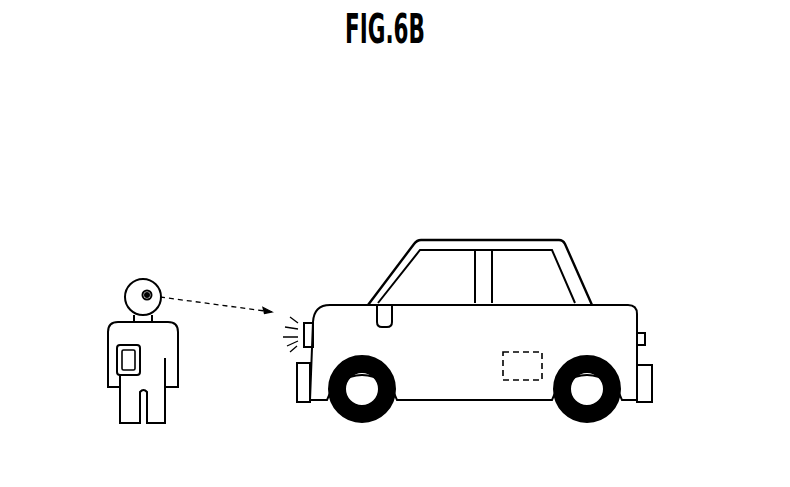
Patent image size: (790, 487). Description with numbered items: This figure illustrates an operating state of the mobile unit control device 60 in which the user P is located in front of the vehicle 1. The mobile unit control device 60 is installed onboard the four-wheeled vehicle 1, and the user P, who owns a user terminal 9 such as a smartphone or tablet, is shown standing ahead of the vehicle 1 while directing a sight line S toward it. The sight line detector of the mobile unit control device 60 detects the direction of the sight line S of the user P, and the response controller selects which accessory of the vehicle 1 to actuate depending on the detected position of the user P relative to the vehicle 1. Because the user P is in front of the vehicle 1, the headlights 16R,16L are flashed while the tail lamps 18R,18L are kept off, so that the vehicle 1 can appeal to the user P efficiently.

The vehicle 1 is at (553, 240).
The user terminal 9 is at (118, 368).
The headlights 16R,16L is at (307, 322).
The tail lamps 18R,18L is at (646, 342).
The mobile unit control device 60 is at (500, 367).
The user P is at (108, 337).
The sight line S is at (203, 302).